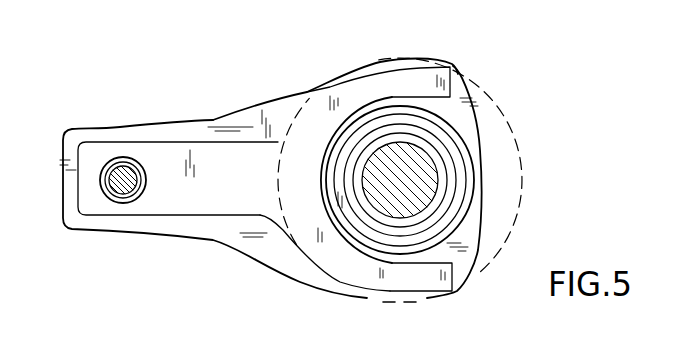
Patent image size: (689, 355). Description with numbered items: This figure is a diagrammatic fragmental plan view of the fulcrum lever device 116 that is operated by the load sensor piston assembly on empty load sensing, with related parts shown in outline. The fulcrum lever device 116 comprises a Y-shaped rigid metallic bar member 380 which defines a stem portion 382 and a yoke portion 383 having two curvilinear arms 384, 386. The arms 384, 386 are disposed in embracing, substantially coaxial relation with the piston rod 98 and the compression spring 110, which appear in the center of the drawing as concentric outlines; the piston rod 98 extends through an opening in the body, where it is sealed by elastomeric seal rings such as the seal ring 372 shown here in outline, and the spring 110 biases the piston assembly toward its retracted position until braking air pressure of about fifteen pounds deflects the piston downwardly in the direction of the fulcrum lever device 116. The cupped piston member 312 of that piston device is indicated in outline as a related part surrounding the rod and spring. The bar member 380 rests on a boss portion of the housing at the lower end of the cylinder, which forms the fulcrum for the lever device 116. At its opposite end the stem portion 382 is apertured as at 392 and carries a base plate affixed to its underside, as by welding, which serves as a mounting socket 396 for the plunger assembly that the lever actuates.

The piston rod 98 is at (430, 185).
The compression spring 110 is at (458, 177).
The fulcrum lever device 116 is at (218, 135).
The piston member 312 is at (507, 113).
The elastomeric seal ring 372 is at (465, 162).
The bar member 380 is at (223, 198).
The stem portion 382 is at (187, 150).
The yoke portion 383 is at (323, 118).
The curvilinear arm 384 is at (453, 70).
The curvilinear arm 386 is at (458, 282).
The aperture 392 is at (133, 161).
The mounting socket 396 is at (108, 164).